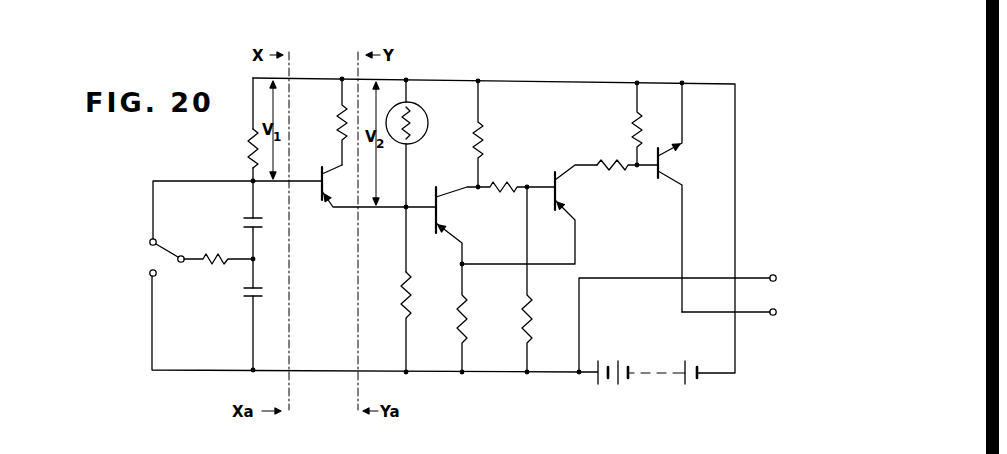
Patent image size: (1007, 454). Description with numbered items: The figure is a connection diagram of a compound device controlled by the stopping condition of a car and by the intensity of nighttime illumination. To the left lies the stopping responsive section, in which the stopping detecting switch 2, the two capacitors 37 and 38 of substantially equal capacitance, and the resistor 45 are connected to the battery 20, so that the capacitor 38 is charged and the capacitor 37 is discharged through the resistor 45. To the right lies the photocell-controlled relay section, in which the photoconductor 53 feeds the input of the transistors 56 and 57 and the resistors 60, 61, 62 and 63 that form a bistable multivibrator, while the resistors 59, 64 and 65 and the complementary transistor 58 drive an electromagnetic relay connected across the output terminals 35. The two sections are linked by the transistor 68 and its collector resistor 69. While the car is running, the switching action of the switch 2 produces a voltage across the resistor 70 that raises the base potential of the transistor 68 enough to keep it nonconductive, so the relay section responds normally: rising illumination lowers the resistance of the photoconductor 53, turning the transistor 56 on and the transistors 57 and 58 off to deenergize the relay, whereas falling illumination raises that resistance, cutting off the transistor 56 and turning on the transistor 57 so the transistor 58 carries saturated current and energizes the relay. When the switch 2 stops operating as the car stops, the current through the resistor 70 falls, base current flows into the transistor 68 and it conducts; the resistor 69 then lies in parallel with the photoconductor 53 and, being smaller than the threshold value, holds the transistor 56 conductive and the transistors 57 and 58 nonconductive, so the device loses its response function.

The stopping detecting switch 2 is at (162, 251).
The battery 20 is at (648, 378).
The output terminals 35 is at (713, 323).
The capacitor 37 is at (247, 222).
The capacitor 38 is at (245, 292).
The resistor 45 is at (216, 255).
The photoconductor 53 is at (428, 113).
The transistor 56 is at (438, 201).
The transistor 57 is at (558, 180).
The complementary transistor 58 is at (662, 157).
The resistor 59 is at (410, 283).
The resistor 60 is at (483, 133).
The resistor 61 is at (502, 193).
The resistor 62 is at (531, 307).
The resistor 63 is at (465, 307).
The resistor 64 is at (609, 162).
The resistor 65 is at (642, 121).
The transistor 68 is at (324, 178).
The collector resistor 69 is at (338, 109).
The resistor 70 is at (250, 142).